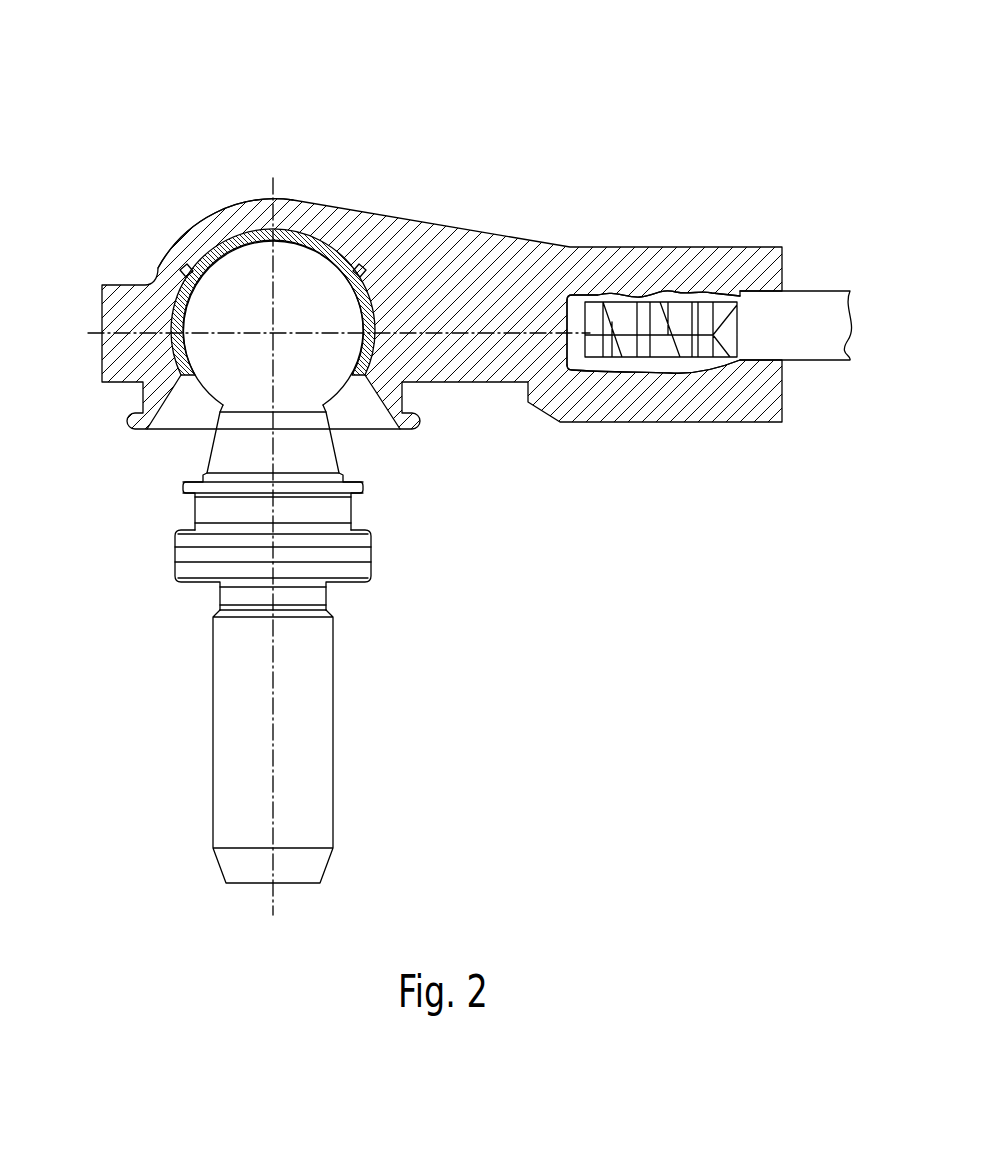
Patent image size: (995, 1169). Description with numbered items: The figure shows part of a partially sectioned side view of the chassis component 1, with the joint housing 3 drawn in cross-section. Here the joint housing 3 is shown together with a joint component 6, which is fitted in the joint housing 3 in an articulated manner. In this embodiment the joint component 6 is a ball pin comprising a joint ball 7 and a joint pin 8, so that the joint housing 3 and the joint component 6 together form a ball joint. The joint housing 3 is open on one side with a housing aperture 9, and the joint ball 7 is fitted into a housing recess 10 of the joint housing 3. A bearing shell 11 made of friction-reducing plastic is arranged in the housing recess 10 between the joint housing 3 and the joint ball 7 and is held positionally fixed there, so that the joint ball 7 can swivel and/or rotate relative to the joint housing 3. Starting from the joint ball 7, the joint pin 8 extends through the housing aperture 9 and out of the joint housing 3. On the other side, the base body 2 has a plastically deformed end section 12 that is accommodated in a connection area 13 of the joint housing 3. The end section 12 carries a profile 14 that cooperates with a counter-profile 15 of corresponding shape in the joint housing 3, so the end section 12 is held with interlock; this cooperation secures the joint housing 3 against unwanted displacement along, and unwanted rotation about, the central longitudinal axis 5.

The chassis component 1 is at (95, 122).
The base body 2 is at (820, 313).
The joint housing 3 is at (450, 263).
The central longitudinal axis 5 is at (507, 330).
The joint component 6 is at (187, 593).
The joint ball 7 is at (318, 268).
The joint pin 8 is at (305, 762).
The housing aperture 9 is at (365, 437).
The housing recess 10 is at (203, 223).
The bearing shell 11 is at (298, 230).
The end section 12 is at (681, 372).
The connection area 13 is at (612, 257).
The profile 14 is at (703, 318).
The counter-profile 15 is at (660, 283).